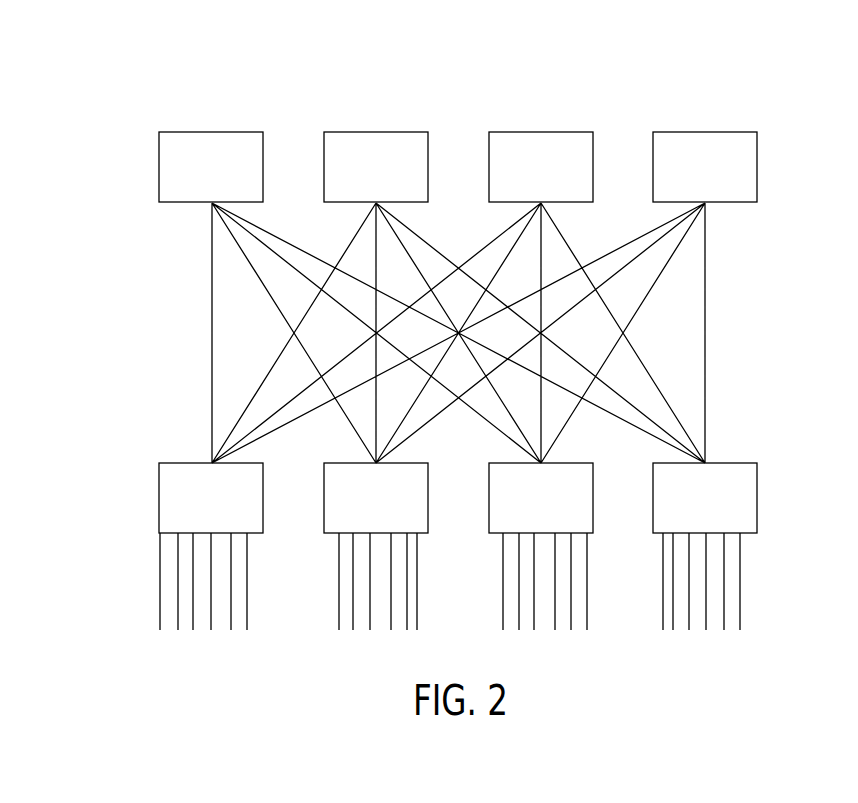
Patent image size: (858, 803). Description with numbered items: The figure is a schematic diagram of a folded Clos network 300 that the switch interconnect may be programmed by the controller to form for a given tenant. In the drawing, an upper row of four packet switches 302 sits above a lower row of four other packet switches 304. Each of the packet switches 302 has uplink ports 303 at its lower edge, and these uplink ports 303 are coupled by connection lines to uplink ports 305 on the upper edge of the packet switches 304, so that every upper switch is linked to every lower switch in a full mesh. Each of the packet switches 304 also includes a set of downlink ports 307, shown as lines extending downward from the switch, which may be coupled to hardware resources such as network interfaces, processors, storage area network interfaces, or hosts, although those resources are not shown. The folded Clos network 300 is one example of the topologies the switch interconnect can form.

The folded Clos network 300 is at (635, 58).
The packet switches 302 is at (212, 132).
The uplink ports 303 is at (210, 225).
The packet switches 304 is at (324, 507).
The uplink ports 305 is at (210, 418).
The downlink ports 307 is at (160, 613).